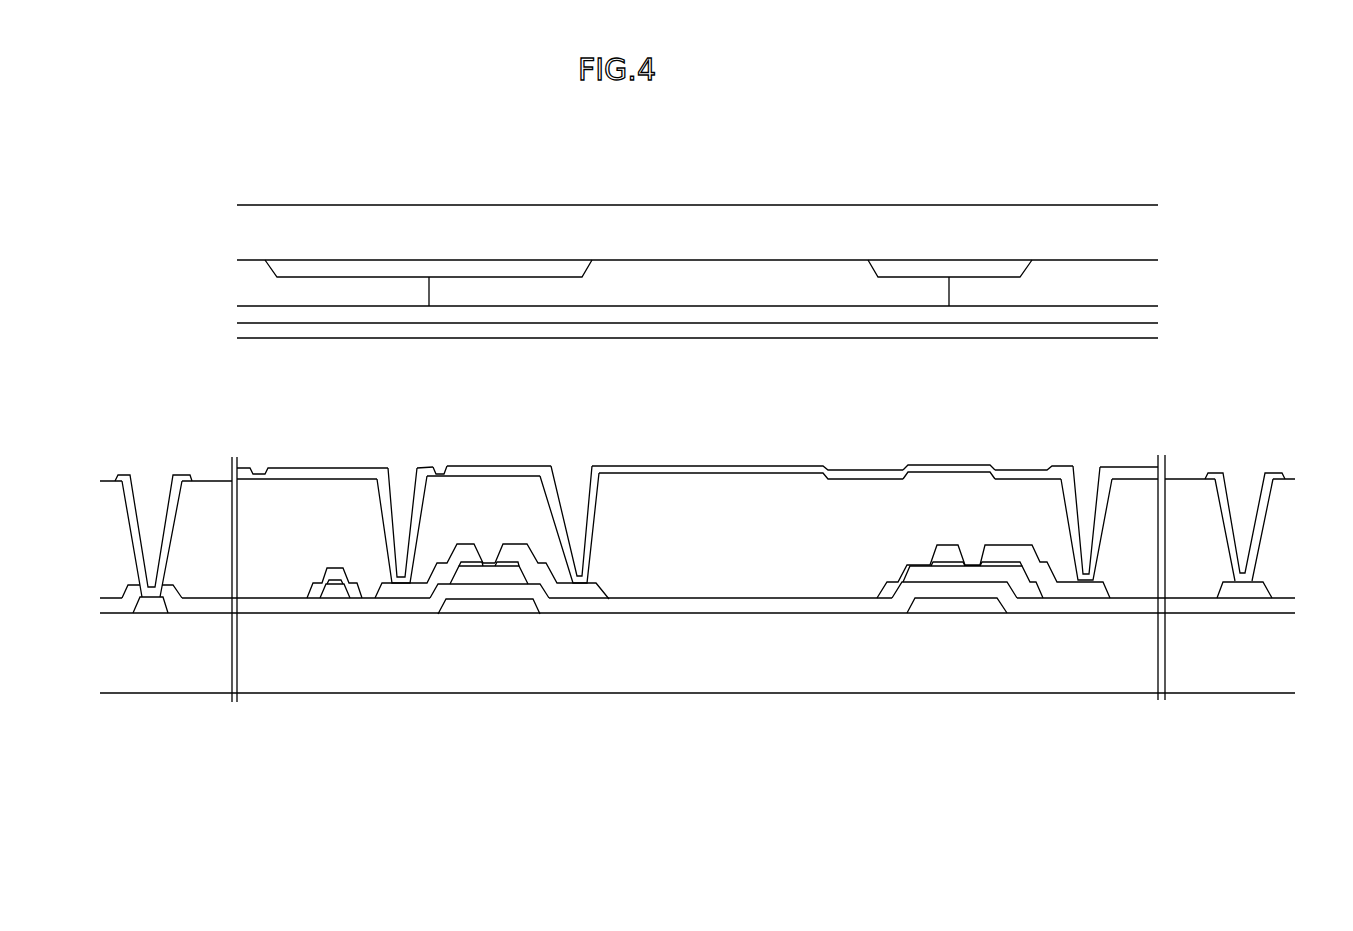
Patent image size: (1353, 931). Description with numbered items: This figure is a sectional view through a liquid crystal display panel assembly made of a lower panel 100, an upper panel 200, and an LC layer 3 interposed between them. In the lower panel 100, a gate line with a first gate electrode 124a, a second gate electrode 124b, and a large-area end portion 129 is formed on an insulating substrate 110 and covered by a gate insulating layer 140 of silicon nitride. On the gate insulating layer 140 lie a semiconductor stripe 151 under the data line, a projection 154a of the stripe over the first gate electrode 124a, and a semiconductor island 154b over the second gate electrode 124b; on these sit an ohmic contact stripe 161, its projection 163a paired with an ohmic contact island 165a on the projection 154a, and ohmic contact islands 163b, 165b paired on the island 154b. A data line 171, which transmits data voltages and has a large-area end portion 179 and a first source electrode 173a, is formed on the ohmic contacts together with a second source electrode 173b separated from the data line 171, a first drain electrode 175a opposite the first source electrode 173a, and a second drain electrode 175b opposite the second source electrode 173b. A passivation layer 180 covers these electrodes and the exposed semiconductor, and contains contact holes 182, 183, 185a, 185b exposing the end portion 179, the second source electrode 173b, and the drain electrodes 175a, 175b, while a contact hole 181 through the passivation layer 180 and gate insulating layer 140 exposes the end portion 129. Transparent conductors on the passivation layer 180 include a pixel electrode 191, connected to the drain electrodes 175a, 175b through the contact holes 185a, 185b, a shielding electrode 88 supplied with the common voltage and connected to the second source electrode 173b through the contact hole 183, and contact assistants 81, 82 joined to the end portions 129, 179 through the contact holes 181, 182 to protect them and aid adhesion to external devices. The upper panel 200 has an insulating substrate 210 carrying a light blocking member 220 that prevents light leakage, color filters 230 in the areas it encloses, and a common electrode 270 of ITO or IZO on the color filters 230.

The LC layer 3 is at (240, 378).
The contact assistant 81 is at (138, 503).
The contact assistant 82 is at (1262, 495).
The shielding electrode 88 is at (433, 467).
The lower panel 100 is at (105, 770).
The insulating substrate 110 is at (202, 683).
The first gate electrode 124a is at (953, 607).
The second gate electrode 124b is at (490, 612).
The end portion of gate line 129 is at (152, 612).
The gate insulating layer 140 is at (115, 607).
The semiconductor stripe 151 is at (331, 601).
The projection of semiconductor stripe 154a is at (981, 573).
The semiconductor island 154b is at (500, 573).
The ohmic contact stripe 161 is at (338, 584).
The projection of ohmic contact stripe 163a is at (942, 566).
The ohmic contact island 163b is at (471, 568).
The ohmic contact island 165a is at (1033, 570).
The ohmic contact island 165b is at (510, 568).
The data line 171 is at (317, 601).
The first source electrode 173a is at (942, 557).
The second source electrode 173b is at (407, 594).
The first drain electrode 175a is at (1092, 586).
The second drain electrode 175b is at (593, 594).
The end portion of data line 179 is at (1268, 587).
The passivation layer 180 is at (682, 588).
The contact hole 181 is at (132, 505).
The contact hole 182 is at (1260, 496).
The contact hole 183 is at (415, 497).
The contact hole 185a is at (1110, 497).
The contact hole 185b is at (588, 497).
The pixel electrode 191 is at (243, 466).
The upper panel 200 is at (1150, 165).
The insulating substrate 210 is at (1148, 232).
The light blocking member 220 is at (558, 267).
The color filter 230 is at (1148, 282).
The common electrode 270 is at (1148, 316).